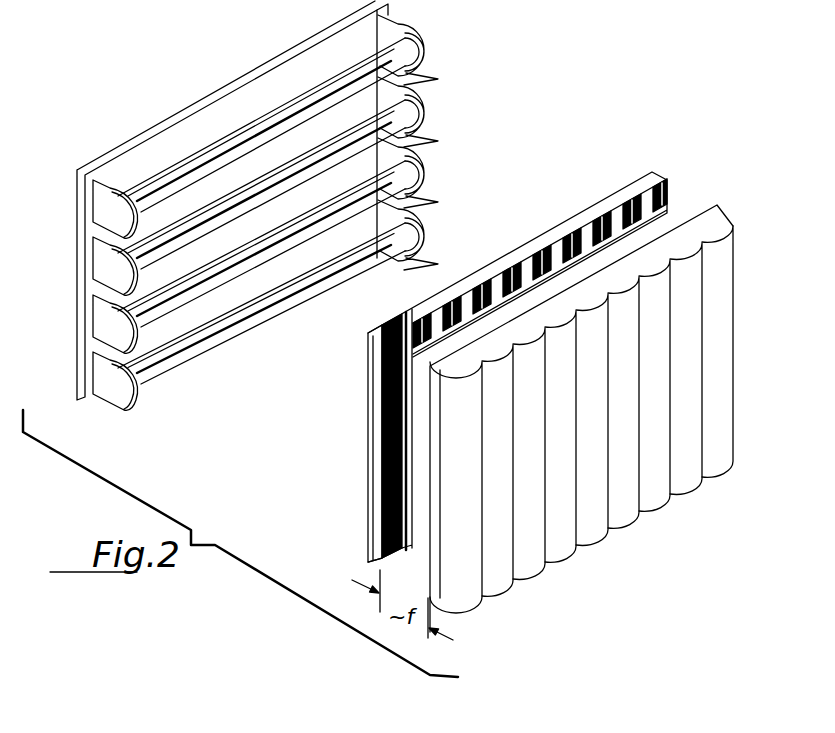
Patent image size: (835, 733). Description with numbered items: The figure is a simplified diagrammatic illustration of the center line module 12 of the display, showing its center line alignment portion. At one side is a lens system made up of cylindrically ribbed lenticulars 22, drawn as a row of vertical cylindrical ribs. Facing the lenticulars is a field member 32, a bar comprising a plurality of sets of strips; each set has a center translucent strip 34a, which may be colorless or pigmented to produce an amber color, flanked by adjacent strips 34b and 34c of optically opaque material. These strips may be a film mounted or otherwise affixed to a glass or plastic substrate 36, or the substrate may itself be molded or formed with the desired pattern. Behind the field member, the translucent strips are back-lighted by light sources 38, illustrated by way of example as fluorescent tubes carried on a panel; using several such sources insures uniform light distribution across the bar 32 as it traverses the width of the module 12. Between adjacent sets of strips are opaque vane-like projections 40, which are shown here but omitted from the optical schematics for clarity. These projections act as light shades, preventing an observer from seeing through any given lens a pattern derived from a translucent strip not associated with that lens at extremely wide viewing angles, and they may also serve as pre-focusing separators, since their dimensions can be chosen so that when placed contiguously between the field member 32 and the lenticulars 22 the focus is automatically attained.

The center line module 12 is at (251, 469).
The cylindrically ribbed lenticulars 22 is at (593, 532).
The field member 32 is at (371, 414).
The center translucent strip 34a is at (402, 324).
The opaque strip 34b is at (382, 353).
The opaque strip 34c is at (404, 322).
The substrate 36 is at (372, 544).
The light sources 38 is at (424, 90).
The opaque vane-like projections 40 is at (668, 213).